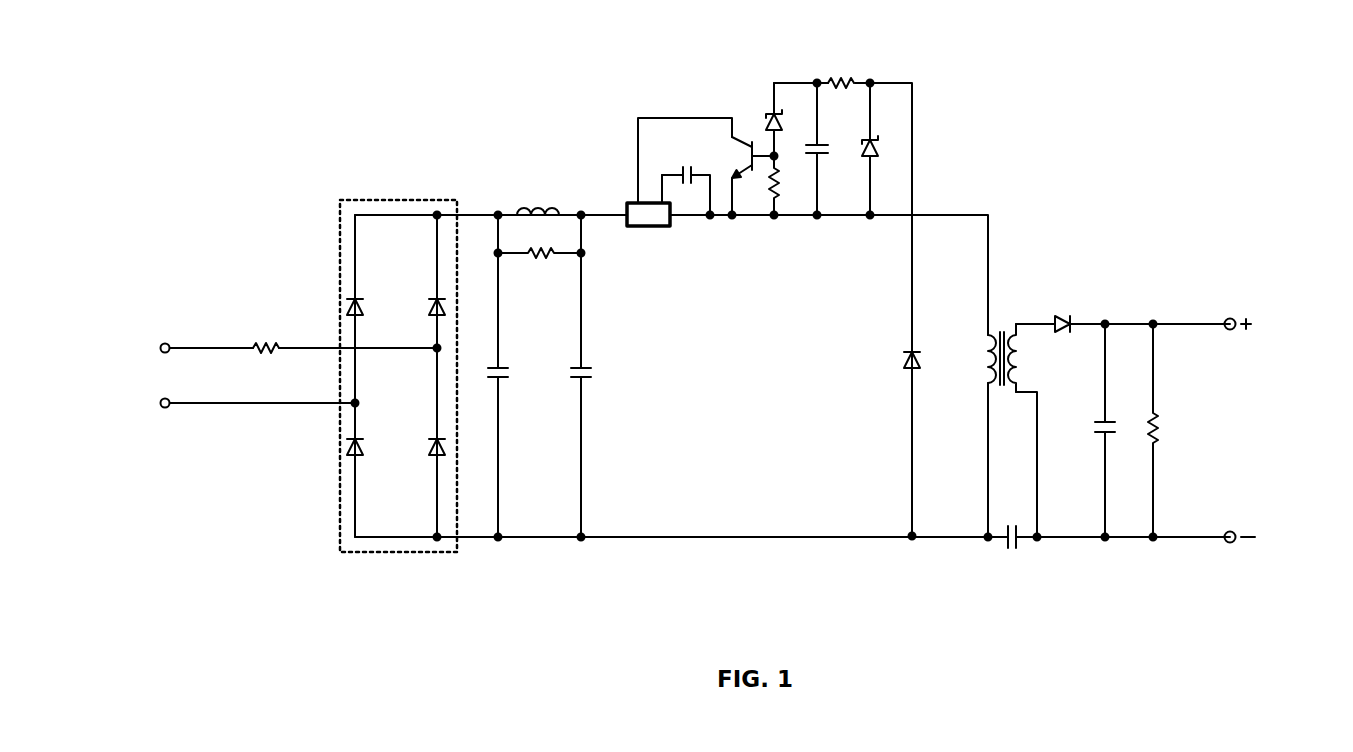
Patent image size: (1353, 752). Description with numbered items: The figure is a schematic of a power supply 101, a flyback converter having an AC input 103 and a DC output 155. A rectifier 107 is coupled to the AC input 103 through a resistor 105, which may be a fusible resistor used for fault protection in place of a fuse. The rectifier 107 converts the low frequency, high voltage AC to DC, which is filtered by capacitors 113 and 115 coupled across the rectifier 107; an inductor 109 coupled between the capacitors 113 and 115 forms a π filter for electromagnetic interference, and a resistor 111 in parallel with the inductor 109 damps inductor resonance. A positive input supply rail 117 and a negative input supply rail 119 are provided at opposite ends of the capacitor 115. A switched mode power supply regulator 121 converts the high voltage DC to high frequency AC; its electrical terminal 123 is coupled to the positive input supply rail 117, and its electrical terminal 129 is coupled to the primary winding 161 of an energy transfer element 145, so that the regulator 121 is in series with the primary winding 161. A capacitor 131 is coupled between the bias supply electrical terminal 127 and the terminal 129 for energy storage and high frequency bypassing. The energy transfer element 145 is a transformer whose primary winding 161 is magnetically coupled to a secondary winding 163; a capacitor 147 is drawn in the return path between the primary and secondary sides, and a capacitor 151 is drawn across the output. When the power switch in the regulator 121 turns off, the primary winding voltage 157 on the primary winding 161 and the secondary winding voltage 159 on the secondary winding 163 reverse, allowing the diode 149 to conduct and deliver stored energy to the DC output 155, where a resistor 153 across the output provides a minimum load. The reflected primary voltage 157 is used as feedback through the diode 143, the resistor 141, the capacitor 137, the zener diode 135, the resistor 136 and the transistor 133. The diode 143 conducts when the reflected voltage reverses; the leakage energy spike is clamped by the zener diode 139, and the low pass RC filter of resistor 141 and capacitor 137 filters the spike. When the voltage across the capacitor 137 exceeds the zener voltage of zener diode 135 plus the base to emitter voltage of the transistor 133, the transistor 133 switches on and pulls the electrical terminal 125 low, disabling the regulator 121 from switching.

The power supply 101 is at (1152, 32).
The AC input 103 is at (130, 347).
The resistor 105 is at (257, 345).
The rectifier 107 is at (405, 205).
The inductor 109 is at (522, 211).
The resistor 111 is at (537, 263).
The capacitor 113 is at (499, 385).
The capacitor 115 is at (584, 384).
The positive input supply rail 117 is at (580, 212).
The negative input supply rail 119 is at (597, 544).
The power supply regulator 121 is at (652, 232).
The electrical terminal 123 is at (623, 226).
The electrical terminal 125 is at (633, 203).
The bias supply electrical terminal 127 is at (658, 203).
The electrical terminal 129 is at (678, 228).
The capacitor 131 is at (688, 165).
The transistor 133 is at (752, 141).
The zener diode 135 is at (772, 113).
The resistor 136 is at (778, 181).
The capacitor 137 is at (825, 156).
The zener diode 139 is at (880, 158).
The resistor 141 is at (835, 78).
The diode 143 is at (900, 357).
The energy transfer element 145 is at (1008, 405).
The capacitor 147 is at (1012, 549).
The diode 149 is at (1063, 317).
The output capacitor 151 is at (1097, 430).
The resistor 153 is at (1160, 435).
The DC output 155 is at (1303, 395).
The voltage V1 157 is at (970, 347).
The voltage V2 159 is at (1038, 369).
The primary winding 161 is at (983, 372).
The secondary winding 163 is at (1017, 395).